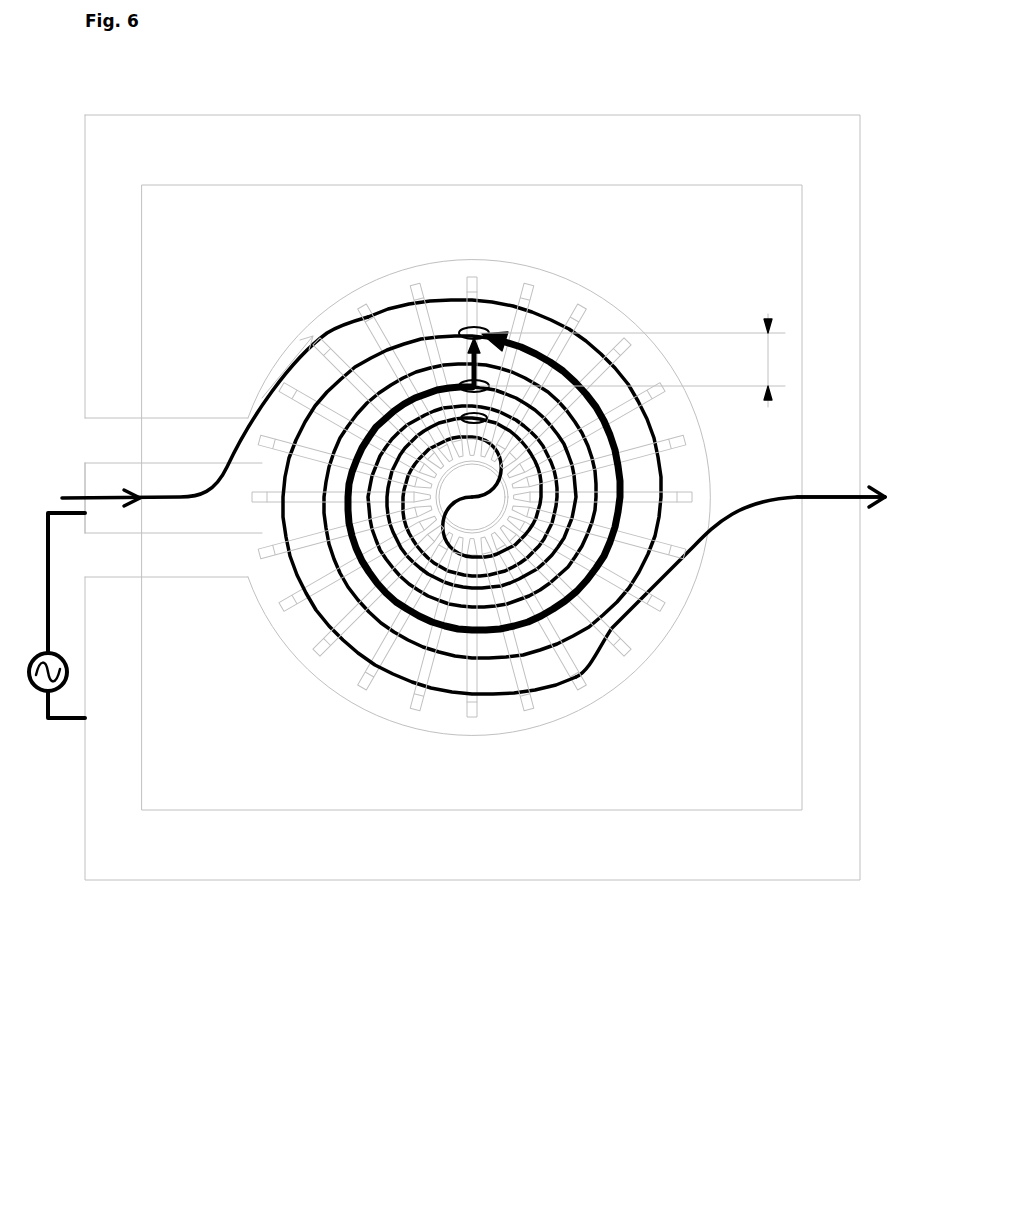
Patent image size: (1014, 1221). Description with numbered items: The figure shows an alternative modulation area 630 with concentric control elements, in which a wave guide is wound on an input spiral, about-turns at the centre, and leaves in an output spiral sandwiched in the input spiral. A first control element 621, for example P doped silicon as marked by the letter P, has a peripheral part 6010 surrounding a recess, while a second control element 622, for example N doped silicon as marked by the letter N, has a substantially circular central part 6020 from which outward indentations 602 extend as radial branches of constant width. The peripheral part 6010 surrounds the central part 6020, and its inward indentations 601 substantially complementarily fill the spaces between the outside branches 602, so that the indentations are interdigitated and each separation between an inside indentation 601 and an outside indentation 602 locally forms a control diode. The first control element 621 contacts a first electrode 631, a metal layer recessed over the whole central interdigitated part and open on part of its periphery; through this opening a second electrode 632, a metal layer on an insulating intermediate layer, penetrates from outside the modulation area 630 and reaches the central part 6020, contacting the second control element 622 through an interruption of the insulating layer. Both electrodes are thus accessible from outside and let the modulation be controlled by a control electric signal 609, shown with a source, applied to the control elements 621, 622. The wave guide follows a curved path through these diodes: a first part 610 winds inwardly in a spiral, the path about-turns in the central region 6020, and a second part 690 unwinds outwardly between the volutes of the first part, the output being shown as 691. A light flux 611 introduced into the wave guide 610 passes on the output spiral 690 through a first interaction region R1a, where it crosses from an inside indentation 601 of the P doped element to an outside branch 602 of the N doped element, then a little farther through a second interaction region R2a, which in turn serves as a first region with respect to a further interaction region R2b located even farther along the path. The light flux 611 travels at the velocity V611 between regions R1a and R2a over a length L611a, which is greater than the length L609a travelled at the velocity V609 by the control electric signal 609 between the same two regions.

The inward indentation 601 is at (455, 705).
The peripheral part 6010 is at (465, 793).
The outward indentation 602 is at (548, 645).
The central part 6020 is at (577, 745).
The control electric signal 609 is at (40, 690).
The first part of the wave guide path 610 is at (180, 503).
The light flux 611 is at (77, 490).
The first control element 621 is at (468, 631).
The second control element 622 is at (472, 634).
The modulation area 630 is at (506, 660).
The first electrode 631 is at (170, 853).
The second electrode 632 is at (99, 470).
The second part of the wave guide path 690 is at (768, 497).
The output signal 691 is at (872, 490).
The velocity of the control electric signal V609 is at (490, 331).
The velocity of the light flux V611 is at (290, 348).
The length travelled by the control electric signal L609a is at (766, 332).
The length travelled by the light flux L611a is at (368, 394).
The first interaction region R1a is at (442, 330).
The second interaction region R2a is at (487, 326).
The further interaction region R2b is at (652, 407).
The N doped silicon N is at (482, 511).
The P doped silicon P is at (285, 772).